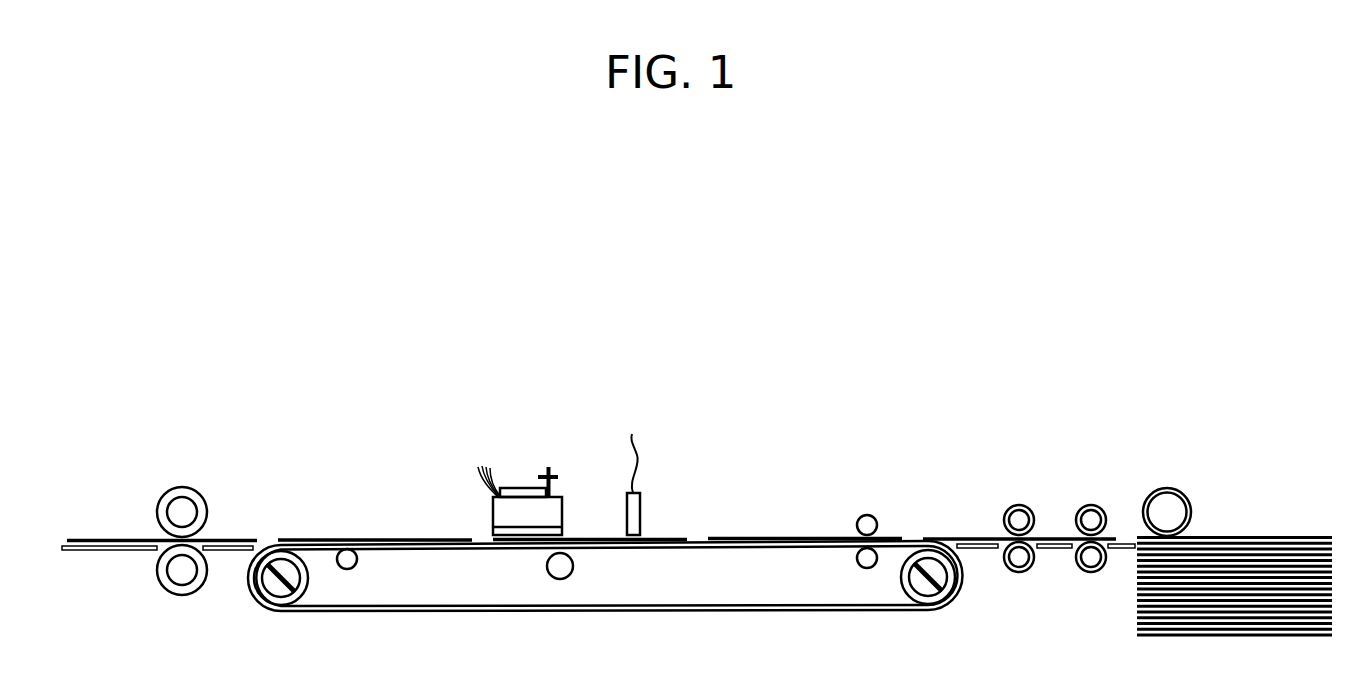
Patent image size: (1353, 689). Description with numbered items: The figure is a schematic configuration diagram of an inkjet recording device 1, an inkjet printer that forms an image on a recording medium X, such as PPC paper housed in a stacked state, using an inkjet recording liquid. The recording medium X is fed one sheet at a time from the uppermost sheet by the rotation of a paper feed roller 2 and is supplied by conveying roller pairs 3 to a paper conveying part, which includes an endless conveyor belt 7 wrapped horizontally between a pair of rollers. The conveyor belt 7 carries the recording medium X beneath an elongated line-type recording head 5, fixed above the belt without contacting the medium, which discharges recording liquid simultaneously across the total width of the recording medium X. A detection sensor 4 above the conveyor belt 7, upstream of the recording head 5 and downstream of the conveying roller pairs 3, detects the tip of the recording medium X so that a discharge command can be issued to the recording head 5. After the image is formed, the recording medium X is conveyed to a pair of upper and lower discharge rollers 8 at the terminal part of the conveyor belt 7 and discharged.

The inkjet recording device 1 is at (882, 272).
The paper feed roller 2 is at (1168, 487).
The conveying roller pairs 3 is at (1019, 505).
The detection sensor 4 is at (633, 512).
The recording head 5 is at (502, 512).
The conveyor belt 7 is at (663, 612).
The discharge rollers 8 is at (203, 512).
The recording medium X is at (363, 538).